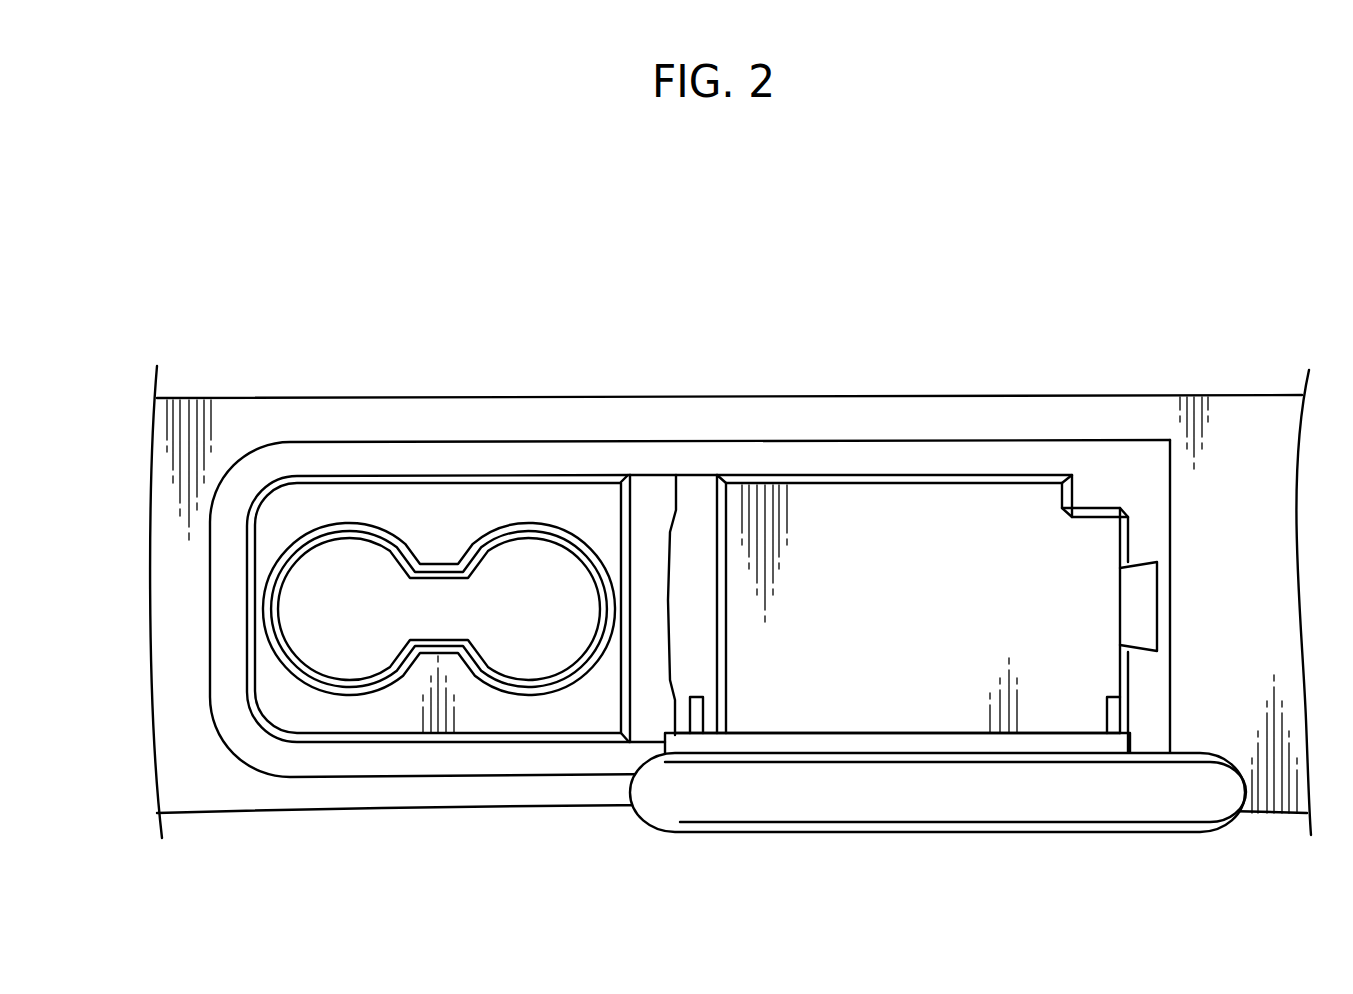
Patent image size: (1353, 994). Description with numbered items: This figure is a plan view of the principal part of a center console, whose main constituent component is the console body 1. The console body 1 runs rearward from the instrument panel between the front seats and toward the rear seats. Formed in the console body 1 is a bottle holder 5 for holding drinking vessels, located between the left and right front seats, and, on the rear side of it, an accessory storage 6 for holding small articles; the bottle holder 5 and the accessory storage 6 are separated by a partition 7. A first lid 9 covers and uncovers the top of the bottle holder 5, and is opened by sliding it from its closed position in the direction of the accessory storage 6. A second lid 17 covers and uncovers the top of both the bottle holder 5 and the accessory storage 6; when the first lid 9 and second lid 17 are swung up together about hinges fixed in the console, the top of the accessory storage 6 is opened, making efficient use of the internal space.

The console body 1 is at (1092, 386).
The bottle holder 5 is at (392, 495).
The accessory storage 6 is at (954, 492).
The partition 7 is at (698, 493).
The first lid 9 is at (797, 808).
The second lid 17 is at (872, 733).